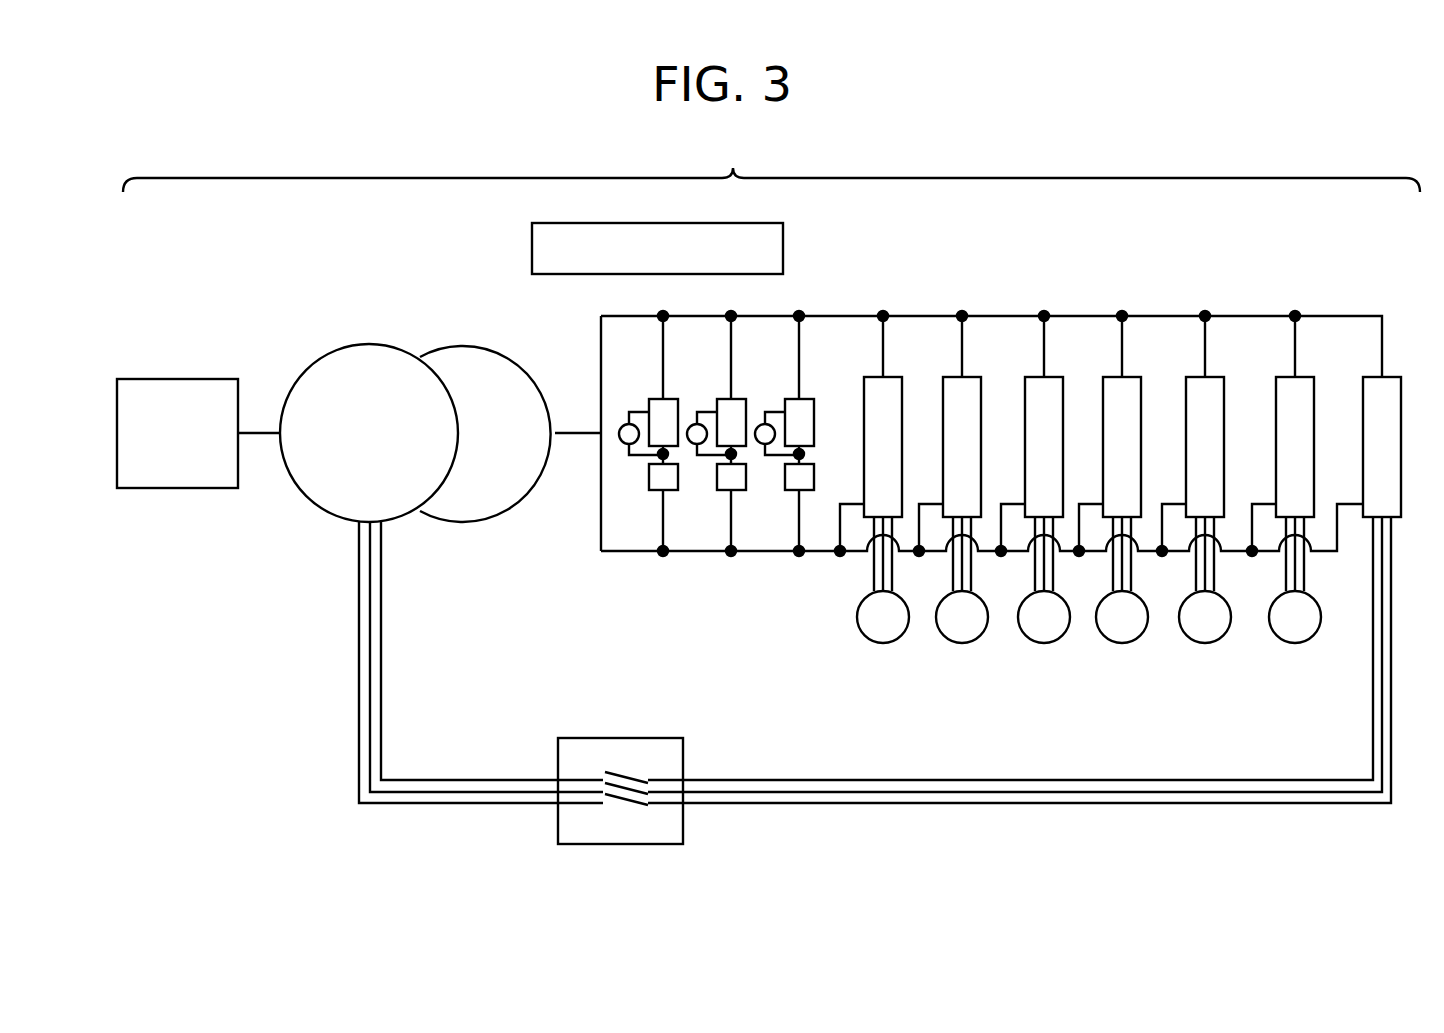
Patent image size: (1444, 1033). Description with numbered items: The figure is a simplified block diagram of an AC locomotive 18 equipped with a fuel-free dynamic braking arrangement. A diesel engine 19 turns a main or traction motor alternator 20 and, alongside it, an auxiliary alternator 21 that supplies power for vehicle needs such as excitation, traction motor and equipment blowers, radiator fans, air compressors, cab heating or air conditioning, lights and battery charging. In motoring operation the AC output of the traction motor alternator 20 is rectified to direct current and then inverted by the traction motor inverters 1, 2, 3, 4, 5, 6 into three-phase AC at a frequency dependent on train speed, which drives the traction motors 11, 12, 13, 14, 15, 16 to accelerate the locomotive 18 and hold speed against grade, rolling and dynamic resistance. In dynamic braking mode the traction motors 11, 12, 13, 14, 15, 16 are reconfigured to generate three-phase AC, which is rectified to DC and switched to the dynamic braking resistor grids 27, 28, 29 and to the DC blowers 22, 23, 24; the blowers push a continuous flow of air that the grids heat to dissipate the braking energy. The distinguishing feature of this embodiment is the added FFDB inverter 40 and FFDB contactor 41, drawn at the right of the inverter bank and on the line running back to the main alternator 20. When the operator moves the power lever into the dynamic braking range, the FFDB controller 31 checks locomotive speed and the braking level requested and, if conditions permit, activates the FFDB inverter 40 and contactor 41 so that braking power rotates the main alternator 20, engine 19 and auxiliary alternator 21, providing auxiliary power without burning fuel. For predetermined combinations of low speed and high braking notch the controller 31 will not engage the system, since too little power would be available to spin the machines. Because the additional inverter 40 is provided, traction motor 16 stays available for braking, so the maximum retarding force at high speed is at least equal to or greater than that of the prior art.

The traction motor inverter 1 is at (1315, 392).
The traction motor inverter 2 is at (1228, 393).
The traction motor inverter 3 is at (1146, 393).
The traction motor inverter 4 is at (1068, 393).
The traction motor inverter 5 is at (988, 393).
The traction motor inverter 6 is at (903, 393).
The traction motor 11 is at (1295, 643).
The traction motor 12 is at (1205, 643).
The traction motor 13 is at (1122, 643).
The traction motor 14 is at (1044, 643).
The traction motor 15 is at (962, 643).
The traction motor 16 is at (883, 643).
The AC locomotive 18 is at (771, 164).
The engine 19 is at (181, 378).
The traction motor alternator 20 is at (367, 344).
The auxiliary alternator 21 is at (468, 344).
The DC blower 22 is at (627, 423).
The DC blower 23 is at (695, 423).
The DC blower 24 is at (763, 423).
The dynamic braking resistor grid 27 is at (658, 490).
The dynamic braking resistor grid 28 is at (726, 490).
The dynamic braking resistor grid 29 is at (794, 490).
The FFDB controller 31 is at (783, 248).
The FFDB inverter 40 is at (1403, 392).
The FFDB contactor 41 is at (616, 738).